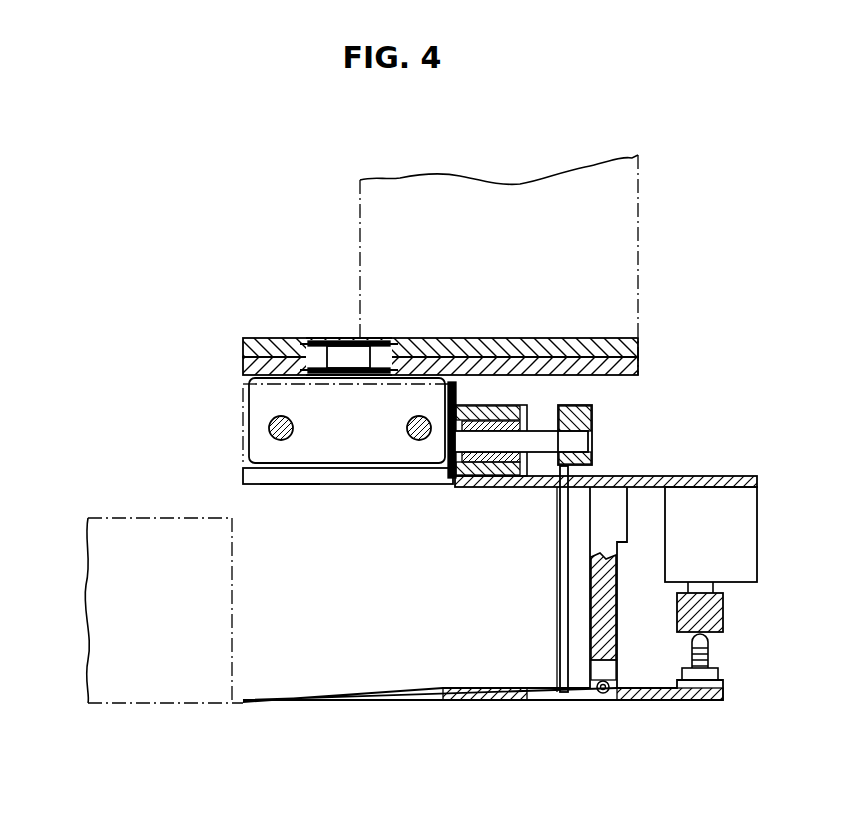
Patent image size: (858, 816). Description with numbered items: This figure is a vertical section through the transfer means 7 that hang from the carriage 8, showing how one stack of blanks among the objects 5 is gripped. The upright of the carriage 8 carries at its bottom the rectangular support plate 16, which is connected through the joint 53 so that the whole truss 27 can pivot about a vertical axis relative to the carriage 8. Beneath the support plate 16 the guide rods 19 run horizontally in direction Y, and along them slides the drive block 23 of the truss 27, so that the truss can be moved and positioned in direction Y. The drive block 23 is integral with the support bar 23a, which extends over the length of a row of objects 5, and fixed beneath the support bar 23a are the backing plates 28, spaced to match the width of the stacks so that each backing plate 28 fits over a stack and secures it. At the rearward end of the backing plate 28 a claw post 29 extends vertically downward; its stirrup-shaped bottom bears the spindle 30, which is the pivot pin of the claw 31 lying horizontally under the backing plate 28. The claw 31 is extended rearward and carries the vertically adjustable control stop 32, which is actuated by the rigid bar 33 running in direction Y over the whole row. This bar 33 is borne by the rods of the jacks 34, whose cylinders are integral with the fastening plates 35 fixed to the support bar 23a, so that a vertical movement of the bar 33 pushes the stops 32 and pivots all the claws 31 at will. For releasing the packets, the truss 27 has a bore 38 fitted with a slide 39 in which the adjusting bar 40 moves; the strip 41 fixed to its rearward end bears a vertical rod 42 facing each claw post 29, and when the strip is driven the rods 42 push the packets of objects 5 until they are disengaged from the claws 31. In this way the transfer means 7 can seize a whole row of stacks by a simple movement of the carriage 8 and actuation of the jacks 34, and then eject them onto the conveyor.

The objects 5 is at (141, 617).
The transfer means 7 is at (352, 329).
The carriage 8 is at (520, 247).
The support plate 16 is at (253, 365).
The guide rods 19 is at (412, 441).
The drive block 23 is at (240, 403).
The support bar 23a is at (471, 486).
The truss 27 is at (239, 468).
The backing plate 28 is at (292, 485).
The claw post 29 is at (600, 577).
The spindle 30 is at (605, 700).
The claw 31 is at (492, 700).
The control stop 32 is at (713, 650).
The rigid bar 33 is at (727, 612).
The jack 34 is at (697, 550).
The fastening plate 35 is at (732, 476).
The bore 38 is at (473, 405).
The slide 39 is at (517, 405).
The adjusting bar 40 is at (592, 439).
The strip 41 is at (592, 416).
The vertical rod 42 is at (560, 647).
The joint 53 is at (327, 342).